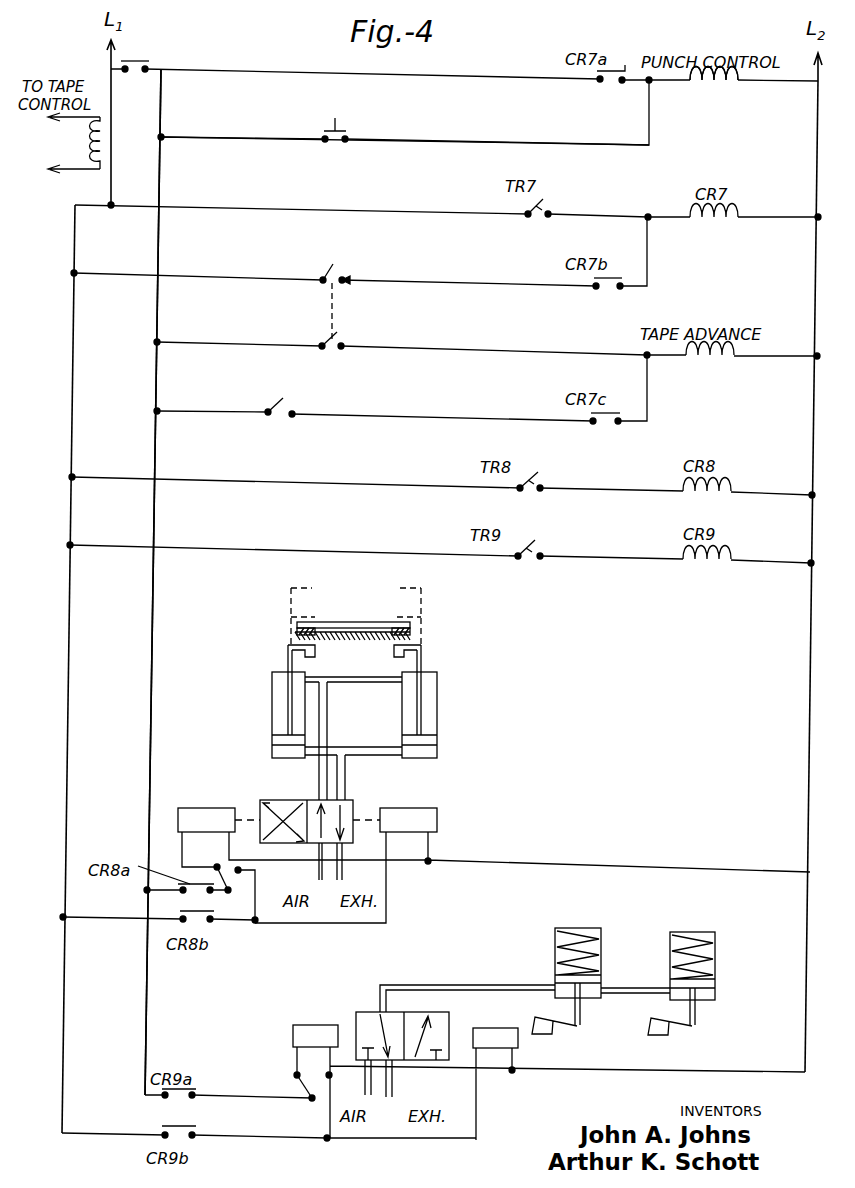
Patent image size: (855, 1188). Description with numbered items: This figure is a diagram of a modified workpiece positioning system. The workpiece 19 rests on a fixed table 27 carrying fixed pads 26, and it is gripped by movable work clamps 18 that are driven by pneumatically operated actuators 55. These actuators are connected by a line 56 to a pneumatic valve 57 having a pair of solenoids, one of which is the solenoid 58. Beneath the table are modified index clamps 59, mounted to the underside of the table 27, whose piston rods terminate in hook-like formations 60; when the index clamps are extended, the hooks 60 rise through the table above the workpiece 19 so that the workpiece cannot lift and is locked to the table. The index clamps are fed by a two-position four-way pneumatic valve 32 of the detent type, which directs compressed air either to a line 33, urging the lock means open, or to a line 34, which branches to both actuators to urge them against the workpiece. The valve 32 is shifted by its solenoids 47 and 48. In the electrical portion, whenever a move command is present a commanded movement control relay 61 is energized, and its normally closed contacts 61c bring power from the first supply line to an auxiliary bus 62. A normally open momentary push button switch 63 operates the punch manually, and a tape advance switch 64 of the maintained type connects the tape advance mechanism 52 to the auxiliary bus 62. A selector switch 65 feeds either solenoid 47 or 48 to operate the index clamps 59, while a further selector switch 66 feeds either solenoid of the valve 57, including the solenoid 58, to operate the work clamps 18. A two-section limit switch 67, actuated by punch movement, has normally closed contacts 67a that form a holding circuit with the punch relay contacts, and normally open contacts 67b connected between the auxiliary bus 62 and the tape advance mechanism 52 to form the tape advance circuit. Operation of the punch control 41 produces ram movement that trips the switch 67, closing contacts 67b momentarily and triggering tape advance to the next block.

The normally closed contacts 61c is at (136, 63).
The commanded movement control relay 61 is at (88, 139).
The momentary push button switch 63 is at (332, 150).
The punch control 41 is at (726, 84).
The auxiliary bus 62 is at (162, 246).
The normally closed contacts 67a is at (338, 278).
The limit switch 67 is at (323, 320).
The normally open contacts 67b is at (346, 345).
The tape advance mechanism 52 is at (722, 362).
The tape advance switch 64 is at (272, 408).
The workpiece 19 is at (352, 622).
The fixed pad 26 is at (300, 632).
The fixed table 27 is at (360, 640).
The hook-like formations 60 is at (288, 647).
The index clamps 59 is at (260, 721).
The line 33 is at (327, 735).
The line 34 is at (346, 787).
The pneumatic valve 32 is at (301, 800).
The solenoid 47 is at (206, 807).
The solenoid 48 is at (425, 807).
The selector switch 65 is at (240, 878).
The solenoid 58 is at (318, 1024).
The pneumatic valve 57 is at (390, 1014).
The line 56 is at (485, 985).
The actuators 55 is at (672, 946).
The work clamps 18 is at (650, 1036).
The selector switch 66 is at (293, 1080).